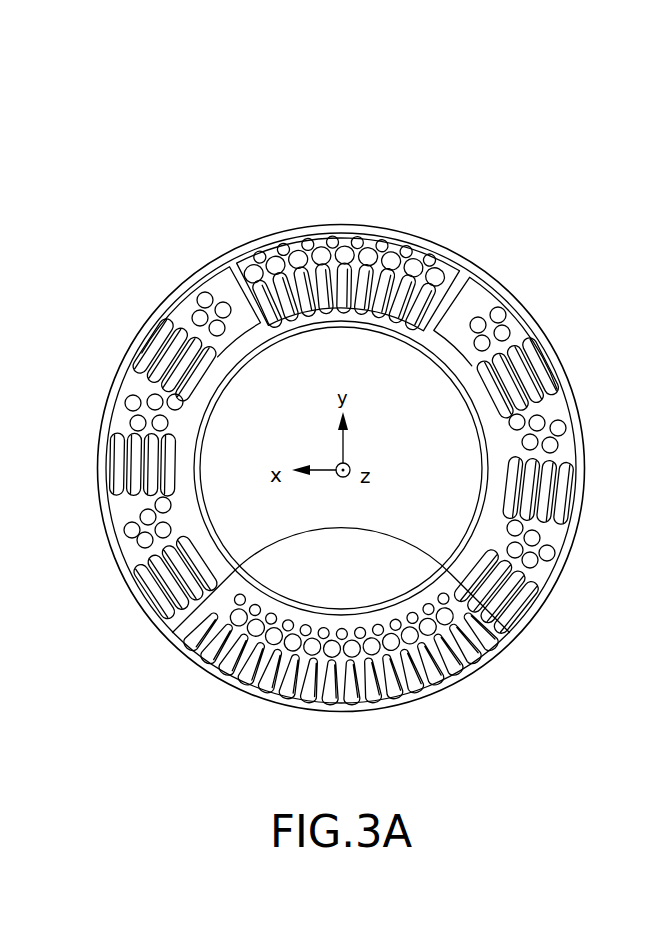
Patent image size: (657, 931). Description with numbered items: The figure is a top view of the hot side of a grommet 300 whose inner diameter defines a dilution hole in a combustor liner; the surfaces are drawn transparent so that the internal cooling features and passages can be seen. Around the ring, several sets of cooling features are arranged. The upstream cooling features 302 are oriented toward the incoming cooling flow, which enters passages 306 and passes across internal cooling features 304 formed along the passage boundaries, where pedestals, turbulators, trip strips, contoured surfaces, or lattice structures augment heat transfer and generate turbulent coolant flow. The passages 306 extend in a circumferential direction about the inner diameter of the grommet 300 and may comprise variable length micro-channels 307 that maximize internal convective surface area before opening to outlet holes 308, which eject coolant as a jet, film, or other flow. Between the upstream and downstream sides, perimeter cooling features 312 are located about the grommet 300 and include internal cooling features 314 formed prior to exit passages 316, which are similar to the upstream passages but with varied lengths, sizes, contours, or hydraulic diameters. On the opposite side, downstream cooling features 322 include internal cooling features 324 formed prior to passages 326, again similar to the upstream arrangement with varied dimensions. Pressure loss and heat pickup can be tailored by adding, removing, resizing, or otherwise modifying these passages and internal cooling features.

The grommet 300 is at (198, 145).
The upstream cooling features 302 is at (455, 266).
The internal cooling features 304 is at (331, 243).
The passages 306 is at (293, 290).
The variable length micro-channels 307 is at (378, 255).
The outlet holes 308 is at (383, 318).
The perimeter cooling features 312 is at (512, 327).
The internal cooling features 314 is at (537, 422).
The exit passages 316 is at (565, 488).
The downstream cooling features 322 is at (490, 657).
The internal cooling features 324 is at (425, 630).
The passages 326 is at (405, 697).